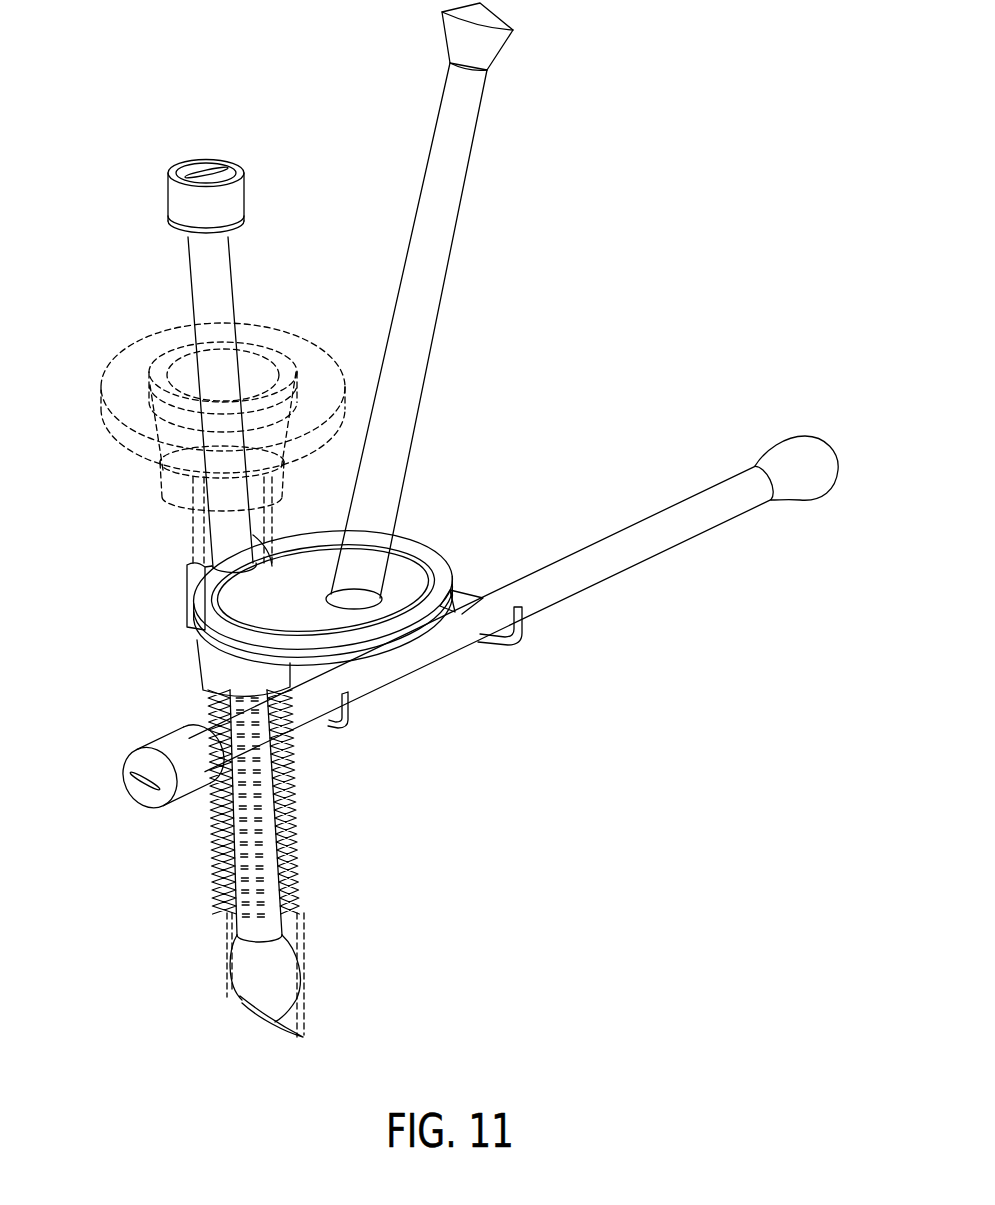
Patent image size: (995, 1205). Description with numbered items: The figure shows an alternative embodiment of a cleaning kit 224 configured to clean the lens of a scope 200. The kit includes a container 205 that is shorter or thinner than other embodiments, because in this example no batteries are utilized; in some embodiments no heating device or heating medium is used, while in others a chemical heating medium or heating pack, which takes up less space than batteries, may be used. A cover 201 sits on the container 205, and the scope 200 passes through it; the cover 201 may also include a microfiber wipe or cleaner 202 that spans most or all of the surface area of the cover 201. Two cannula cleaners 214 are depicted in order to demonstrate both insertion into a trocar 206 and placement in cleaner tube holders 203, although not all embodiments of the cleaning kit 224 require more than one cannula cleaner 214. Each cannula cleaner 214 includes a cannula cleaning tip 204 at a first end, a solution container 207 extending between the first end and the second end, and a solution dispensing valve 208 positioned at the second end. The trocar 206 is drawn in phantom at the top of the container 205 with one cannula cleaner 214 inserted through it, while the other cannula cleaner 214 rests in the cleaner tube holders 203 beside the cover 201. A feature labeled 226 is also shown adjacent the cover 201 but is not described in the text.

The scope 200 is at (438, 118).
The cover 201 is at (430, 563).
The microfiber wipe or cleaner 202 is at (317, 610).
The cleaner tube holder 203 is at (495, 650).
The cannula cleaning tip 204 is at (818, 438).
The container 205 is at (197, 663).
The trocar 206 is at (108, 437).
The solution container 207 is at (190, 290).
The solution dispensing valve 208 is at (205, 158).
The cannula cleaner 214 is at (283, 261).
The cleaning kit 224 is at (445, 508).
The bracket 226 is at (478, 600).